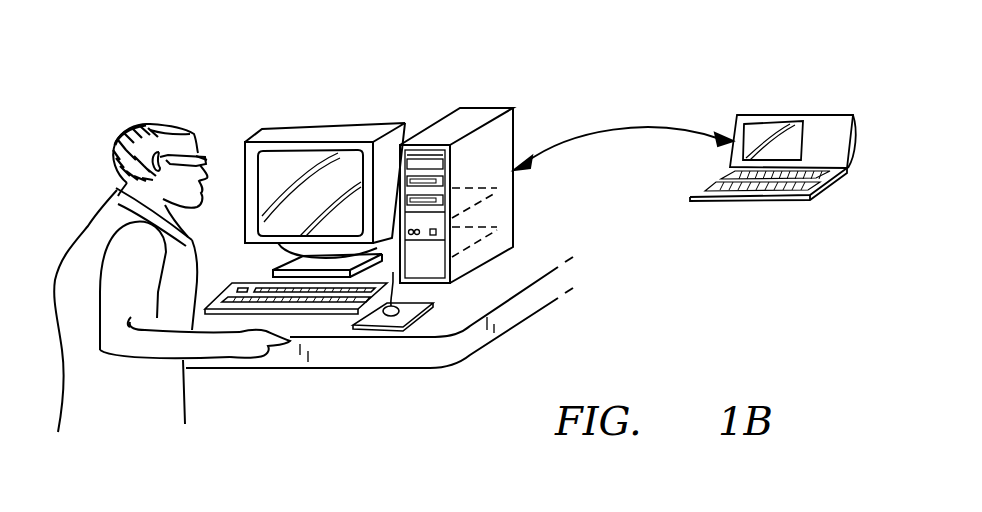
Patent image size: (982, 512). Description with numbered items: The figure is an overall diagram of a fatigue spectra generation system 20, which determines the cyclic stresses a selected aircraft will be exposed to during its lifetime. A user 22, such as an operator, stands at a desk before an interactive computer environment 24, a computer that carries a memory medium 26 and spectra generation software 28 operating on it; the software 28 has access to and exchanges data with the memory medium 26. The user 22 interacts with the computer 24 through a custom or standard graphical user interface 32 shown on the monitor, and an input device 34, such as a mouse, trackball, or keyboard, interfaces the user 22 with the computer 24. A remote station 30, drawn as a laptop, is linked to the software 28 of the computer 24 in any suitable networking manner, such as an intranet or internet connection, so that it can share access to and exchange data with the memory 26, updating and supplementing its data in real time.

The fatigue spectra generation system 20 is at (614, 283).
The user 22 is at (147, 127).
The interactive computer environment 24 is at (477, 110).
The memory medium 26 is at (497, 190).
The spectra generation software 28 is at (497, 229).
The remote station 30 is at (810, 117).
The graphical user interface 32 is at (285, 170).
The input device 34 is at (392, 318).